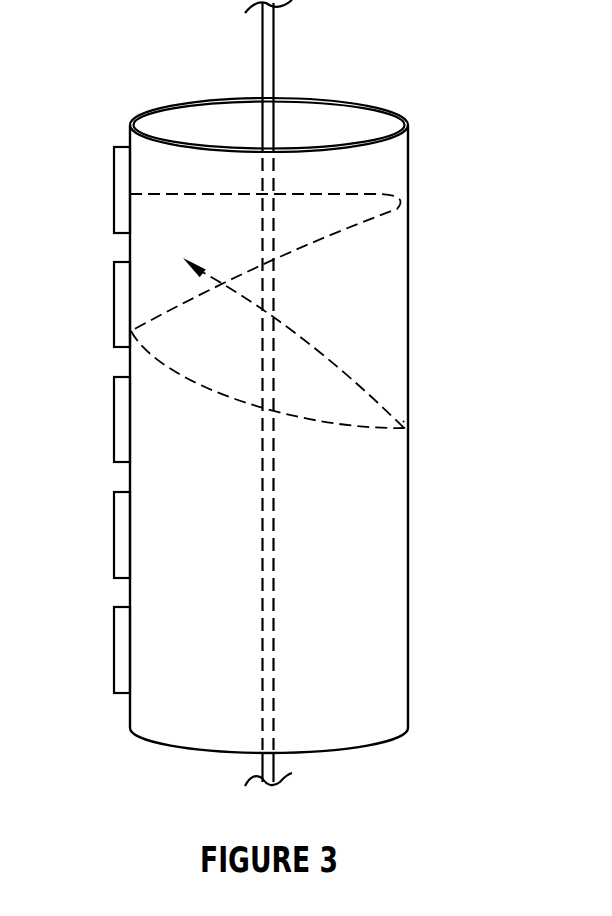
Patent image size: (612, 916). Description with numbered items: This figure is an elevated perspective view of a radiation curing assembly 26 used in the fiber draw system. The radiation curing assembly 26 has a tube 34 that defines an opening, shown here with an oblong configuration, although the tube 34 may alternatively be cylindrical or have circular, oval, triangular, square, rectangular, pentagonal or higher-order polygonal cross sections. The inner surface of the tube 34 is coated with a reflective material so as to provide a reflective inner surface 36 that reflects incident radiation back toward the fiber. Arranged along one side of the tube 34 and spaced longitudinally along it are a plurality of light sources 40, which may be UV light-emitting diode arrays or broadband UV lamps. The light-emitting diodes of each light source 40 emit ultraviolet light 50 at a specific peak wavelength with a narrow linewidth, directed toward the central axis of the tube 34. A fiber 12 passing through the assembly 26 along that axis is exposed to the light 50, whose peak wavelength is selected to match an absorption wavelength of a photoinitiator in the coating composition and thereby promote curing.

The shaft 12 is at (262, 50).
The radiation curing assembly 26 is at (334, 384).
The tube 34 is at (373, 610).
The reflective inner surface 36 is at (348, 121).
The light sources 40 is at (113, 208).
The ultraviolet light 50 is at (345, 370).